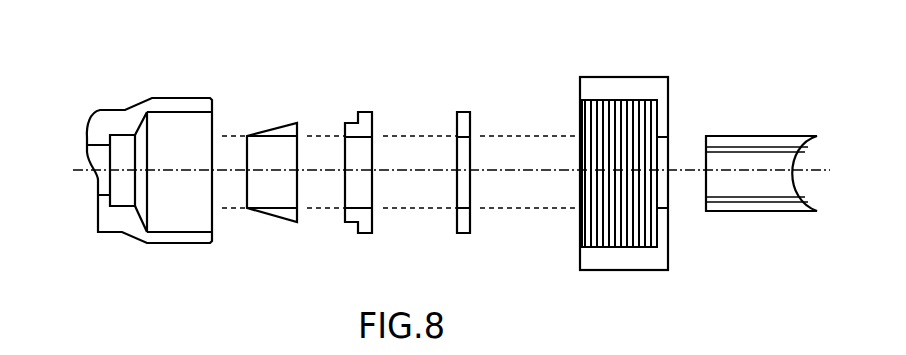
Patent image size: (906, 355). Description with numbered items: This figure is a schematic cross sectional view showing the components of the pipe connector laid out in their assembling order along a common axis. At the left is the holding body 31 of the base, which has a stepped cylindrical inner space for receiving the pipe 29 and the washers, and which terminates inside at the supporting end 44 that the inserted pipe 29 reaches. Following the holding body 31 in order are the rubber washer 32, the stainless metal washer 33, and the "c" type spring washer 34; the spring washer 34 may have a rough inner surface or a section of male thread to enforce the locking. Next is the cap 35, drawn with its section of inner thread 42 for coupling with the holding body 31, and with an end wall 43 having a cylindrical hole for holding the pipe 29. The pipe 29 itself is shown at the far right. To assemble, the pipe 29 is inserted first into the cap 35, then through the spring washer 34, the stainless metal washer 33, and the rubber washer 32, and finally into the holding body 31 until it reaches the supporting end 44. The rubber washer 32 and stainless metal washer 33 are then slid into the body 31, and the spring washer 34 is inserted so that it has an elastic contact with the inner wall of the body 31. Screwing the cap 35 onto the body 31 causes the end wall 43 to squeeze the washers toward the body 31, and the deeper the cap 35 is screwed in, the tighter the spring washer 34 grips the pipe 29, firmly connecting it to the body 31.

The pipe 29 is at (762, 134).
The holding body 31 is at (217, 108).
The rubber washer 32 is at (290, 121).
The stainless metal washer 33 is at (377, 132).
The "c" type spring washer 34 is at (475, 120).
The cap 35 is at (623, 75).
The inner thread 42 is at (582, 230).
The end wall 43 is at (673, 118).
The supporting end 44 is at (115, 165).